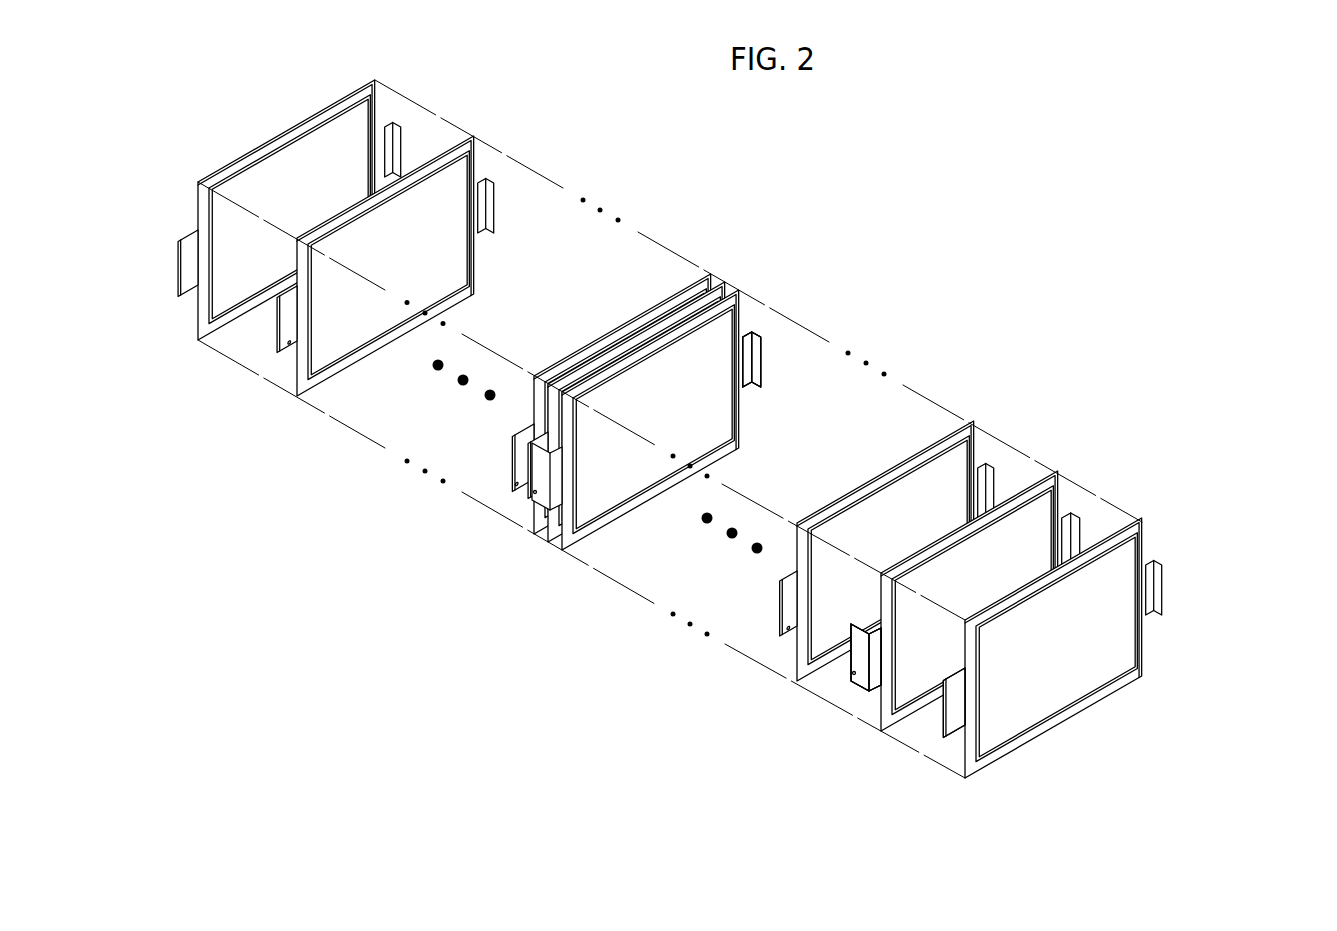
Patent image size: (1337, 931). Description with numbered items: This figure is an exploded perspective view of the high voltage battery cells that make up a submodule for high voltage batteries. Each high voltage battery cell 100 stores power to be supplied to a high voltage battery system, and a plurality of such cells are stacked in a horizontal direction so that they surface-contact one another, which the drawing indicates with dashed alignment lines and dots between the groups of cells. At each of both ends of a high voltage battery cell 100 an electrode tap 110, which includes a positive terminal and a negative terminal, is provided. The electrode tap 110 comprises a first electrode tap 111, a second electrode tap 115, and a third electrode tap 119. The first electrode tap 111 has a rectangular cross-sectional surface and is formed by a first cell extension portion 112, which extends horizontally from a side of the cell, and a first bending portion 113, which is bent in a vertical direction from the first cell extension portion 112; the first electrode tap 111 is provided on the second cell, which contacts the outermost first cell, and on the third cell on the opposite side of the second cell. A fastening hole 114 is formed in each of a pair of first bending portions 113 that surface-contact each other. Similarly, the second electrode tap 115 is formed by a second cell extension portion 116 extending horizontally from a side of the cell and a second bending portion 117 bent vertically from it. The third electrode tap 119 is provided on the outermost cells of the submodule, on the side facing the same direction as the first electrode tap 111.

The high voltage battery cell 100 is at (751, 255).
The electrode tap 110 is at (1034, 569).
The first electrode tap 111 is at (840, 795).
The first cell extension portion 112 is at (873, 657).
The first bending portion 113 is at (860, 653).
The fastening hole 114 is at (782, 642).
The second electrode tap 115 is at (860, 257).
The second cell extension portion 116 is at (763, 343).
The second bending portion 117 is at (763, 376).
The third electrode tap 119 is at (953, 712).